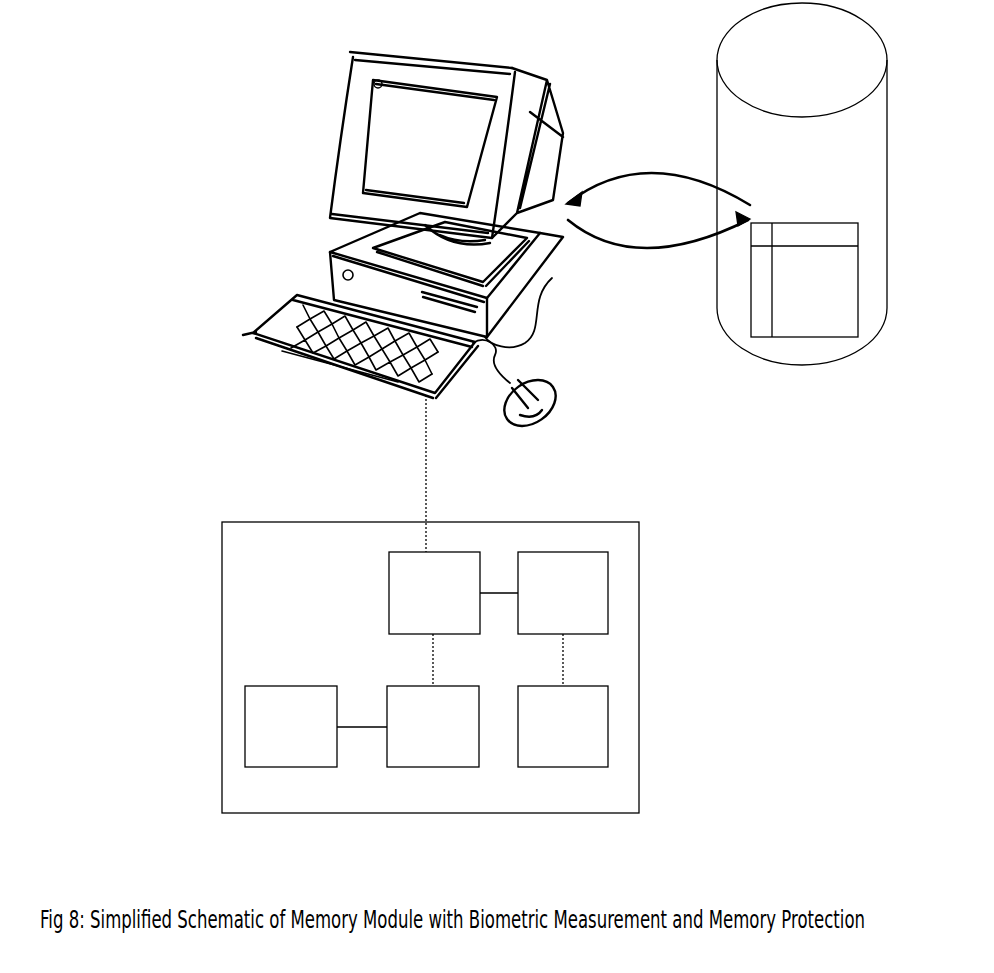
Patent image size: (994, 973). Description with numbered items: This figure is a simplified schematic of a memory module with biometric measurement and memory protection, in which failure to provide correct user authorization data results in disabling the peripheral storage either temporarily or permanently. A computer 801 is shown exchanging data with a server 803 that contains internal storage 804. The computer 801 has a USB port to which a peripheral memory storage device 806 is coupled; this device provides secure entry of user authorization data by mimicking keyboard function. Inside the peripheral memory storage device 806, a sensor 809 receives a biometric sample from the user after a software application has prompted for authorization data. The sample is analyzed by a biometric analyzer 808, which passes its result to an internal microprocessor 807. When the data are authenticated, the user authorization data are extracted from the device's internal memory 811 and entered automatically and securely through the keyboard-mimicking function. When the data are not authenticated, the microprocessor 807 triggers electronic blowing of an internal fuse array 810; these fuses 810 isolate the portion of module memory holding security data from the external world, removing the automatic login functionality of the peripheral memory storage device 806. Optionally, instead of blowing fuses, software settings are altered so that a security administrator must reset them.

The computer 801 is at (403, 231).
The server 803 is at (800, 365).
The internal storage 804 is at (804, 280).
The peripheral memory storage device 806 is at (451, 667).
The internal microprocessor 807 is at (434, 593).
The biometric analyzer 808 is at (433, 726).
The sensor 809 is at (291, 726).
The internal fuse array 810 is at (563, 593).
The internal memory 811 is at (563, 726).